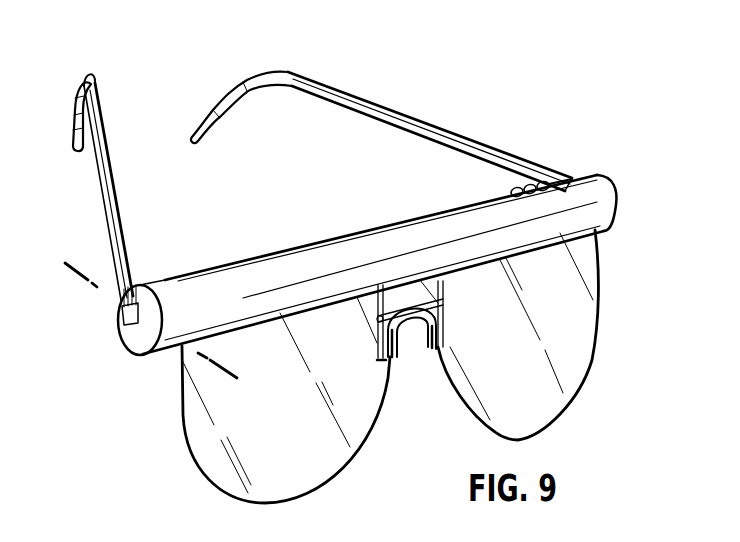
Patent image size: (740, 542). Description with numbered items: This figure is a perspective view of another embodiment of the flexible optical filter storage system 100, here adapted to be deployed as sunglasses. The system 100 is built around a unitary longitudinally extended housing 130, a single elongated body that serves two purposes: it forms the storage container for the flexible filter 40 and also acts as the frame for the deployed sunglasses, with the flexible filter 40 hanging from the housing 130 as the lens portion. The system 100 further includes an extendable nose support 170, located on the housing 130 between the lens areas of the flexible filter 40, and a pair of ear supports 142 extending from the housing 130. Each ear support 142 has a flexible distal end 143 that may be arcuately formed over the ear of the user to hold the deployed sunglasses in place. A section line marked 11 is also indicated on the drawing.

The flexible optical filter storage system 100 is at (640, 234).
The unitary longitudinally extended housing 130 is at (213, 312).
The ear supports 142 is at (122, 234).
The flexible distal end 143 is at (77, 112).
The flexible filter 40 is at (585, 375).
The extendable nose support 170 is at (420, 333).
The section line 11- 11 is at (67, 272).